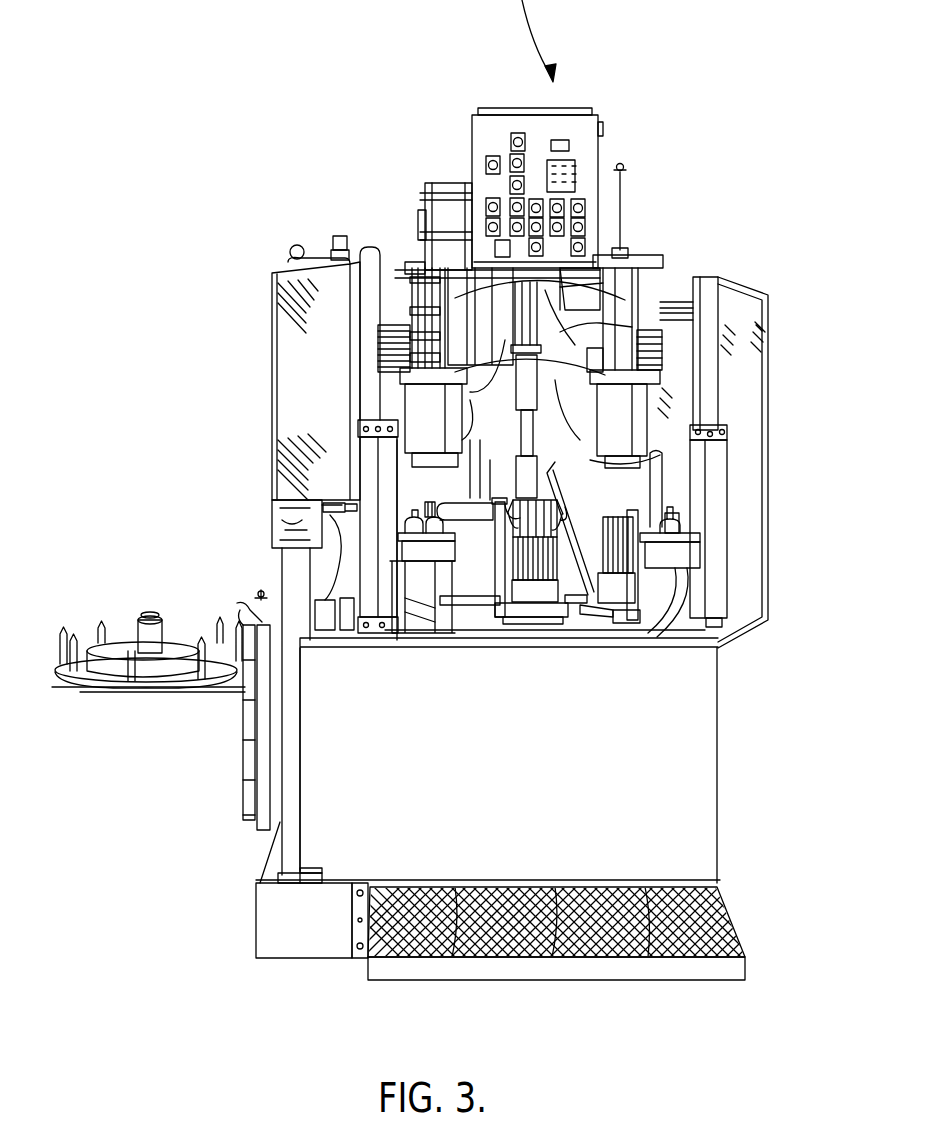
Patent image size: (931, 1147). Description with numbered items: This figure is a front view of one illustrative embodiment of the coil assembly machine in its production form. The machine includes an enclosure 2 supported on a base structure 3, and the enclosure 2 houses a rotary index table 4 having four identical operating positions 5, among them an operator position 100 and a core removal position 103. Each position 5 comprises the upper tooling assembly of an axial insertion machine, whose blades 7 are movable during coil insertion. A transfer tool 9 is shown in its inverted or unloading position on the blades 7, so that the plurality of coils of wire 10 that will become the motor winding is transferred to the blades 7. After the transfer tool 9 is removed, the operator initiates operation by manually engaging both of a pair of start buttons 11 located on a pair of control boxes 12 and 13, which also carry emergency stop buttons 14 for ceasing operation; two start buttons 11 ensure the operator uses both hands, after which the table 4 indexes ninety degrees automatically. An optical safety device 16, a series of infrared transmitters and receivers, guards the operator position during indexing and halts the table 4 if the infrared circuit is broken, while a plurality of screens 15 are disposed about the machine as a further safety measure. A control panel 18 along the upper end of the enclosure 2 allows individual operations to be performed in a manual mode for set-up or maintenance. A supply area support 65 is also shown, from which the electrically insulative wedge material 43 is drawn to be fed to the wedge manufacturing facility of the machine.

The enclosure 2 is at (728, 686).
The base structure 3 is at (303, 935).
The rotary index table 4 is at (483, 623).
The operating position 5 is at (523, 617).
The blades 7 is at (552, 560).
The transfer tool 9 is at (508, 510).
The coils of wire 10 is at (570, 603).
The start buttons 11 is at (788, 528).
The control box 12 is at (423, 550).
The control box 13 is at (687, 553).
The emergency stop buttons 14 is at (410, 521).
The screens 15 is at (278, 270).
The optical safety device 16 is at (370, 450).
The control panel 18 is at (583, 138).
The wedge material 43 is at (117, 653).
The supply area support 65 is at (124, 692).
The operator position 100 is at (537, 603).
The core removal position 103 is at (615, 585).